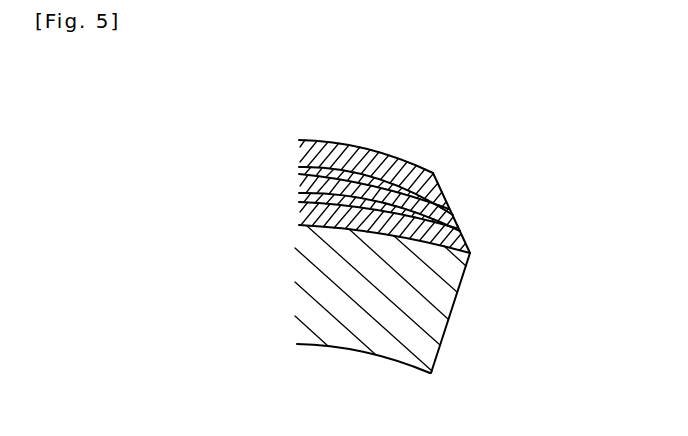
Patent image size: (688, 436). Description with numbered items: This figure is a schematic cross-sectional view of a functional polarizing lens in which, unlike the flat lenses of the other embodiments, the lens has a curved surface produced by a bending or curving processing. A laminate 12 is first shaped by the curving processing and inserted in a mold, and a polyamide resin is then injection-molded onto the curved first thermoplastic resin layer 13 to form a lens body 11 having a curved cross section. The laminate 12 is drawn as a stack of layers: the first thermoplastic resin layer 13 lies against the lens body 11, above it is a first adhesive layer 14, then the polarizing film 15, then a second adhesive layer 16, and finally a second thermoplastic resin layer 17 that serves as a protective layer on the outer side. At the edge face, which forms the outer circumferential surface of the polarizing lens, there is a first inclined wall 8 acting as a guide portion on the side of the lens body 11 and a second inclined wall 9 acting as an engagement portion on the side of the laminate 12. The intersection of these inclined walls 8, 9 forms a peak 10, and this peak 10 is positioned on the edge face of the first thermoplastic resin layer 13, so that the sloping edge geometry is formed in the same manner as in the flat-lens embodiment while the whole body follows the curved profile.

The laminate 12 is at (329, 130).
The second thermoplastic resin layer 17 is at (395, 168).
The second adhesive layer 16 is at (362, 182).
The second inclined wall 9 is at (445, 190).
The first adhesive layer 14 is at (372, 206).
The polarizing film 15 is at (326, 195).
The first thermoplastic resin layer 13 is at (403, 228).
The peak 10 is at (471, 253).
The first inclined wall 8 is at (450, 318).
The lens body 11 is at (346, 337).